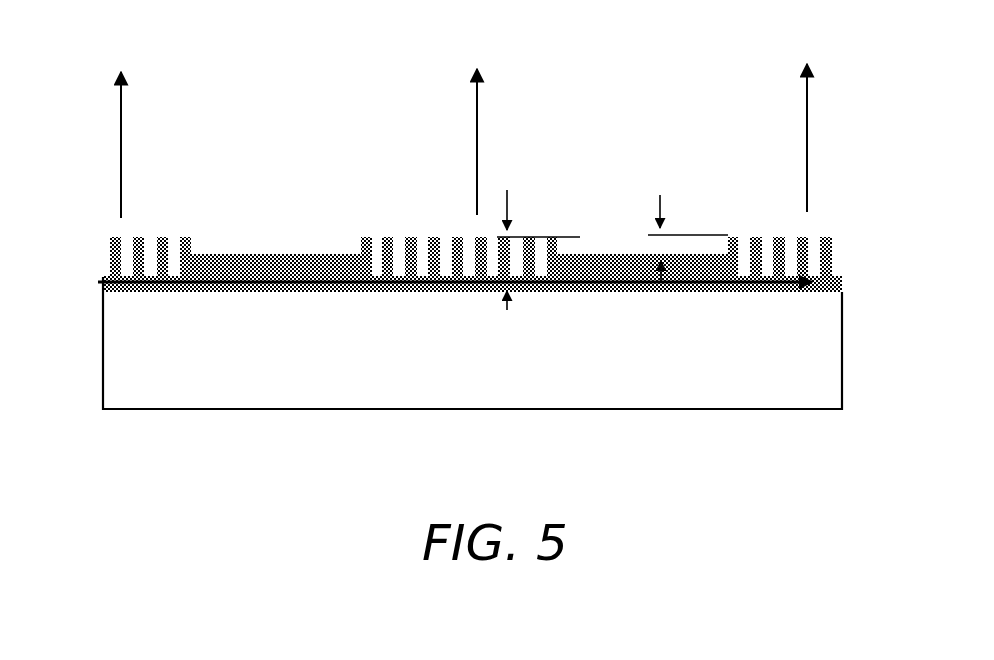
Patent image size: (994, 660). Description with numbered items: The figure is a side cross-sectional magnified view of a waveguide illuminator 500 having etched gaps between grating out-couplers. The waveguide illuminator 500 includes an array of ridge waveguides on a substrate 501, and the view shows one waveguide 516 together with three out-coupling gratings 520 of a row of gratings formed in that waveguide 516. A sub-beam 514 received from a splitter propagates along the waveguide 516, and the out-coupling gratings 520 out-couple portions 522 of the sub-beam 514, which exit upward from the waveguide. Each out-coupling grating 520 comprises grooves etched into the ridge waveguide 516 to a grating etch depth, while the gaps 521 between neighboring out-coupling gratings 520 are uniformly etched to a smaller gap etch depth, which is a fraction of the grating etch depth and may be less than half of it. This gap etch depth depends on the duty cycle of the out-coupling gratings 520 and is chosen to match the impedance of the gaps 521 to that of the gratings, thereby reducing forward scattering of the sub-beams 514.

The waveguide illuminator 500 is at (486, 243).
The substrate 501 is at (765, 371).
The sub-beam 514 is at (290, 285).
The waveguide 516 is at (233, 285).
The out-coupling grating 520 is at (92, 235).
The gap 521 is at (274, 218).
The portion of sub-beam 522 is at (121, 92).